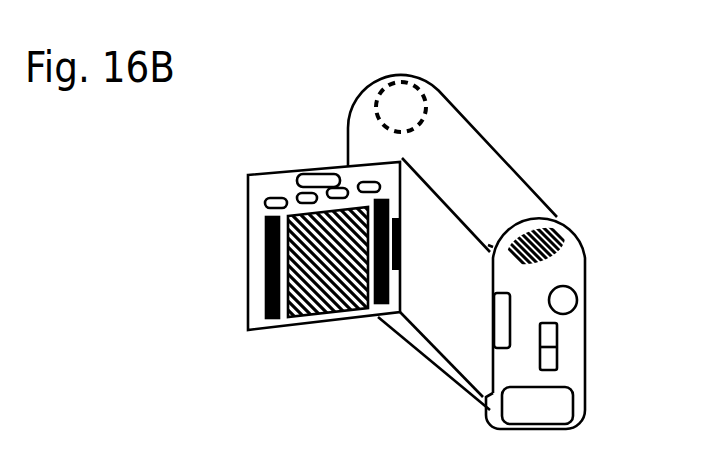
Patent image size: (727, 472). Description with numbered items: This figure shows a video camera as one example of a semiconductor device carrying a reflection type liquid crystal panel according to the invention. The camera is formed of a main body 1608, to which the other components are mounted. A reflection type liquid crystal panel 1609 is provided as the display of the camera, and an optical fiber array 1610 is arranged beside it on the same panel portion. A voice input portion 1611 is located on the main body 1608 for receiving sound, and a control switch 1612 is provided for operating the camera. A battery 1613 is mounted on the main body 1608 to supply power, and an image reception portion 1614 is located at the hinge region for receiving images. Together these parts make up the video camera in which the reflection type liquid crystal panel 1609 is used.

The main body 1608 is at (450, 137).
The reflection type liquid crystal panel 1609 is at (303, 290).
The optical fiber array 1610 is at (377, 303).
The voice input portion 1611 is at (550, 240).
The control switch 1612 is at (313, 184).
The battery 1613 is at (543, 402).
The image reception portion 1614 is at (395, 76).